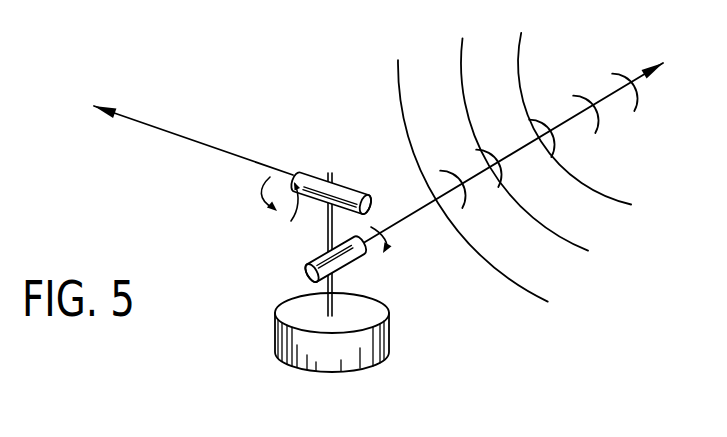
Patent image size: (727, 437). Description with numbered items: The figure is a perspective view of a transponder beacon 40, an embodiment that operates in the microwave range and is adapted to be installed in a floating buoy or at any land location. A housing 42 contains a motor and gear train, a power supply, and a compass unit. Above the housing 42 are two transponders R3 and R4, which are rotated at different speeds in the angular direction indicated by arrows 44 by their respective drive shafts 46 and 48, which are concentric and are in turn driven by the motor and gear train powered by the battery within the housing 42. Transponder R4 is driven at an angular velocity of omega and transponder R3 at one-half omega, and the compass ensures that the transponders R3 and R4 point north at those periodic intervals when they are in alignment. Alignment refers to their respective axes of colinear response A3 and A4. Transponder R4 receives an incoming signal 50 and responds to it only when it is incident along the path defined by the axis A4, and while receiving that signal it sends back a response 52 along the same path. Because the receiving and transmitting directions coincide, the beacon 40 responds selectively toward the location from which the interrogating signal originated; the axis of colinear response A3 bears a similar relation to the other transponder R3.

The transponder beacon 40 is at (322, 297).
The housing 42 is at (353, 332).
The arrows 44 is at (314, 227).
The drive shaft 46 is at (303, 243).
The drive shaft 48 is at (348, 264).
The incoming signal 50 is at (514, 167).
The response 52 is at (555, 117).
The axis of colinear response A3 is at (193, 140).
The axis of colinear response A4 is at (644, 87).
The transponder R3 is at (281, 215).
The transponder R4 is at (268, 292).